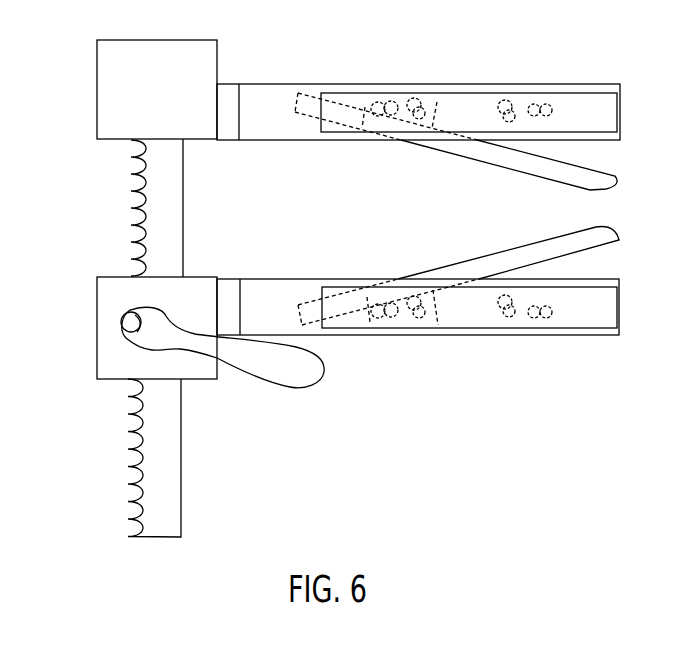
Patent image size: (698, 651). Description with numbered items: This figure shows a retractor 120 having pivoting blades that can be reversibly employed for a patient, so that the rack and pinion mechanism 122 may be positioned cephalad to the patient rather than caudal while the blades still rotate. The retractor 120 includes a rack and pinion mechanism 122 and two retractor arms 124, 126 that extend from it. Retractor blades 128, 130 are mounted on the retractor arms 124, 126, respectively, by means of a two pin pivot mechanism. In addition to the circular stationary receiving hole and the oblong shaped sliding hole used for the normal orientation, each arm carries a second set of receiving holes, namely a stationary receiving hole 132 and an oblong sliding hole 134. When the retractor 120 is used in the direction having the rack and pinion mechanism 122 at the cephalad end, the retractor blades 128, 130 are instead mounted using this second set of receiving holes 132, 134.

The retractor 120 is at (86, 236).
The rack and pinion mechanism 122 is at (77, 278).
The retractor arm 124 is at (283, 92).
The retractor arm 126 is at (272, 287).
The retractor blade 128 is at (619, 178).
The retractor blade 130 is at (619, 241).
The stationary receiving hole 132 is at (540, 318).
The oblong sliding hole 134 is at (506, 317).